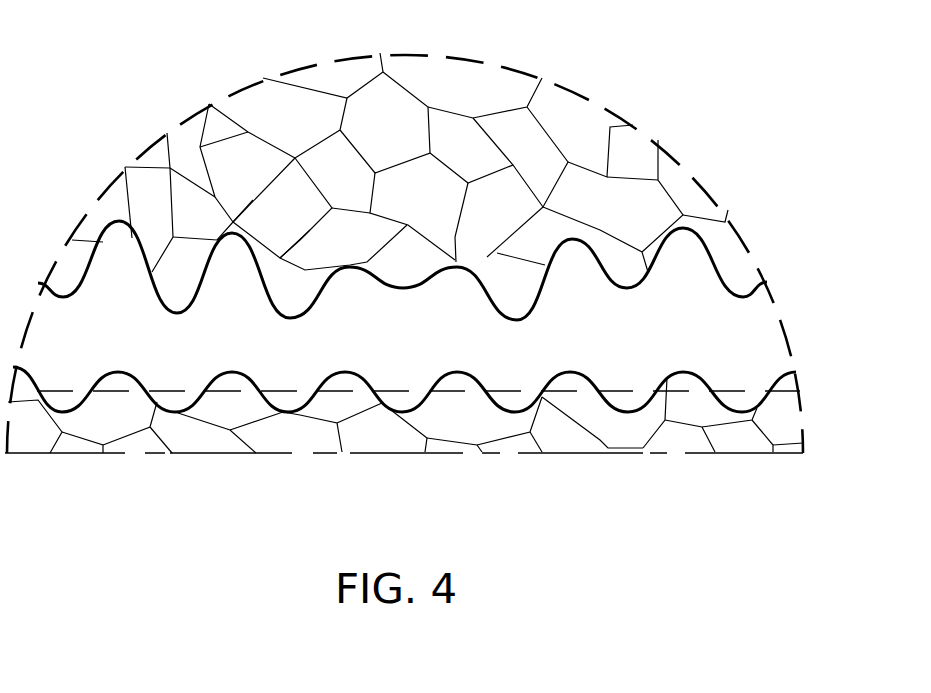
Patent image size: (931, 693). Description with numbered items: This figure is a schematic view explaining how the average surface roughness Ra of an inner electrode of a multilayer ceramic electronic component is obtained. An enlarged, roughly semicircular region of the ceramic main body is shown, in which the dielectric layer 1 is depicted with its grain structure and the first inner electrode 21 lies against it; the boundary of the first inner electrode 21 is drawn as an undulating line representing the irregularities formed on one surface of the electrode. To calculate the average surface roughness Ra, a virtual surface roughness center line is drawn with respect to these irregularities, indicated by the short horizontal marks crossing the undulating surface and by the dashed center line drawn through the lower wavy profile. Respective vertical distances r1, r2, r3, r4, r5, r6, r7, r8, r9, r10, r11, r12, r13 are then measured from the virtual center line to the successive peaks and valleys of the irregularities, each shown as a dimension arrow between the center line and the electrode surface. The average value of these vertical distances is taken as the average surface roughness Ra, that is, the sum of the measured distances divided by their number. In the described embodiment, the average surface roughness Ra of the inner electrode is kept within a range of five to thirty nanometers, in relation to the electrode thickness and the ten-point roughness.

The dielectric layer 1 is at (683, 192).
The first inner electrode 21 is at (765, 326).
The average surface roughness Ra is at (406, 442).
The vertical distance r1 is at (63, 256).
The vertical distance r2 is at (119, 199).
The vertical distance r3 is at (177, 256).
The vertical distance r4 is at (232, 211).
The vertical distance r5 is at (290, 256).
The vertical distance r6 is at (349, 245).
The vertical distance r7 is at (403, 256).
The vertical distance r8 is at (457, 240).
The vertical distance r9 is at (517, 256).
The vertical distance r10 is at (572, 216).
The vertical distance r11 is at (627, 256).
The vertical distance r12 is at (683, 206).
The vertical distance r13 is at (743, 256).